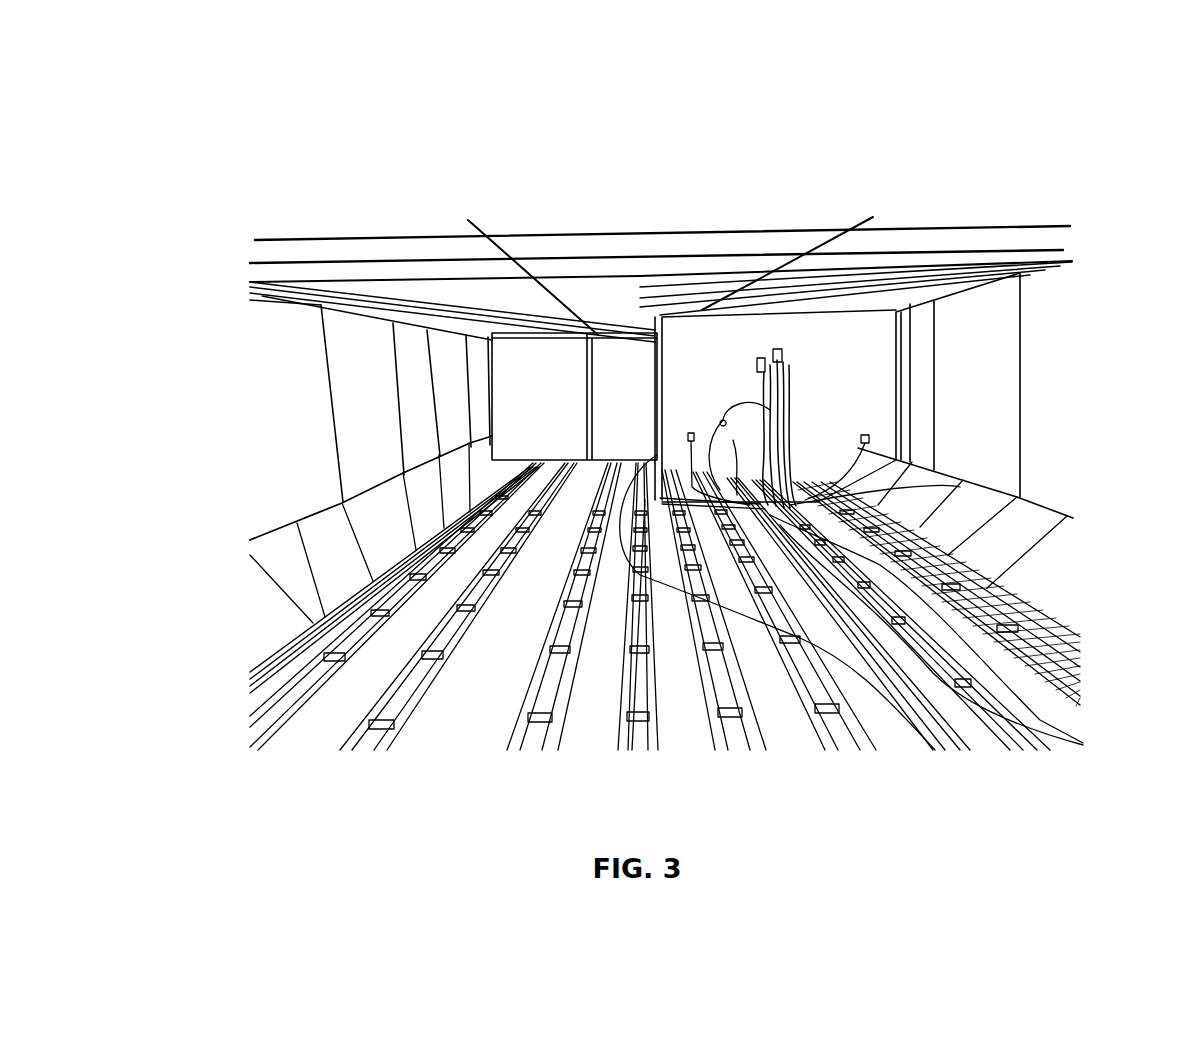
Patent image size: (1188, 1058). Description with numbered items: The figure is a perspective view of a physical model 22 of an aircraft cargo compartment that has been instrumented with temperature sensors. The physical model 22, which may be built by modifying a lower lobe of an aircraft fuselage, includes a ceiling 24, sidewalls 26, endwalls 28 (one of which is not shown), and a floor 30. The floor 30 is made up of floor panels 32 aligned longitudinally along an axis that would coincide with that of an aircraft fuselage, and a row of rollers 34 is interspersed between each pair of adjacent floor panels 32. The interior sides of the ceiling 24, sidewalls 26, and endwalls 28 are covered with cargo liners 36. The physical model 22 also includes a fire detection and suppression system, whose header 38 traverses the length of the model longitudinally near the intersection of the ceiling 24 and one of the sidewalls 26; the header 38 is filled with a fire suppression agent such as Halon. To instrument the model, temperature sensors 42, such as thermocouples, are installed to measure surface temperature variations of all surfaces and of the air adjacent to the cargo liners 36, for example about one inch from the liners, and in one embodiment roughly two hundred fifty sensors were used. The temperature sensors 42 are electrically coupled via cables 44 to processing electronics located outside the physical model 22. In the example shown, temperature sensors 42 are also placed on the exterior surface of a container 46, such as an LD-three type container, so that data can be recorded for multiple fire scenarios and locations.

The physical model 22 is at (662, 125).
The ceiling 24 is at (562, 253).
The sidewalls 26 is at (278, 462).
The endwalls 28 is at (548, 394).
The floor 30 is at (765, 685).
The floor panels 32 is at (439, 715).
The rollers 34 is at (369, 724).
The cargo liners 36 is at (360, 248).
The header 38 is at (275, 300).
The temperature sensors 42 is at (777, 348).
The cables 44 is at (1068, 735).
The container 46 is at (845, 333).